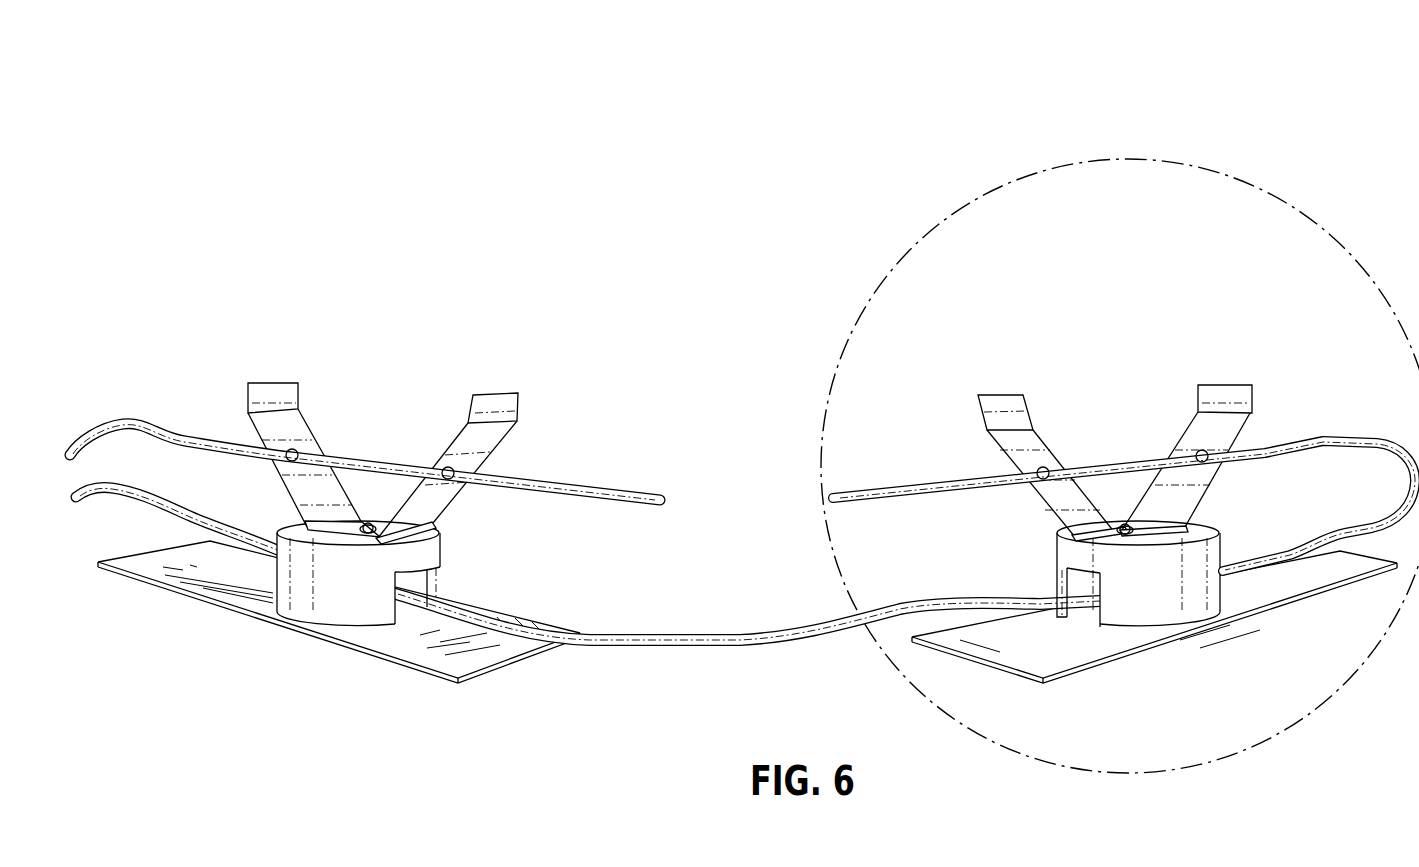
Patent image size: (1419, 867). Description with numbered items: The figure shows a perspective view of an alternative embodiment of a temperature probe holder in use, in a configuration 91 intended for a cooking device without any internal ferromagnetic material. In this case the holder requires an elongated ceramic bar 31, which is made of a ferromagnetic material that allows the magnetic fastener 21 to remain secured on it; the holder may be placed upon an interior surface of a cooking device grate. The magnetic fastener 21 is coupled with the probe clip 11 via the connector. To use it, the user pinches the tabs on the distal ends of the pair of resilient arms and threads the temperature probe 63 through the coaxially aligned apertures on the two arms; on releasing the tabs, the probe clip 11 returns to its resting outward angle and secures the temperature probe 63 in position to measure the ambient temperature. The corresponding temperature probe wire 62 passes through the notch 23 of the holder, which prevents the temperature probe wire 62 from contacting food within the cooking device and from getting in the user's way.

The probe clip 11 is at (507, 413).
The magnetic fastener 21 is at (290, 580).
The notch 23 is at (413, 582).
The elongated ceramic bar 31 is at (187, 567).
The temperature probe wire 62 is at (672, 632).
The temperature probe 63 is at (632, 490).
The configuration 91 is at (152, 368).